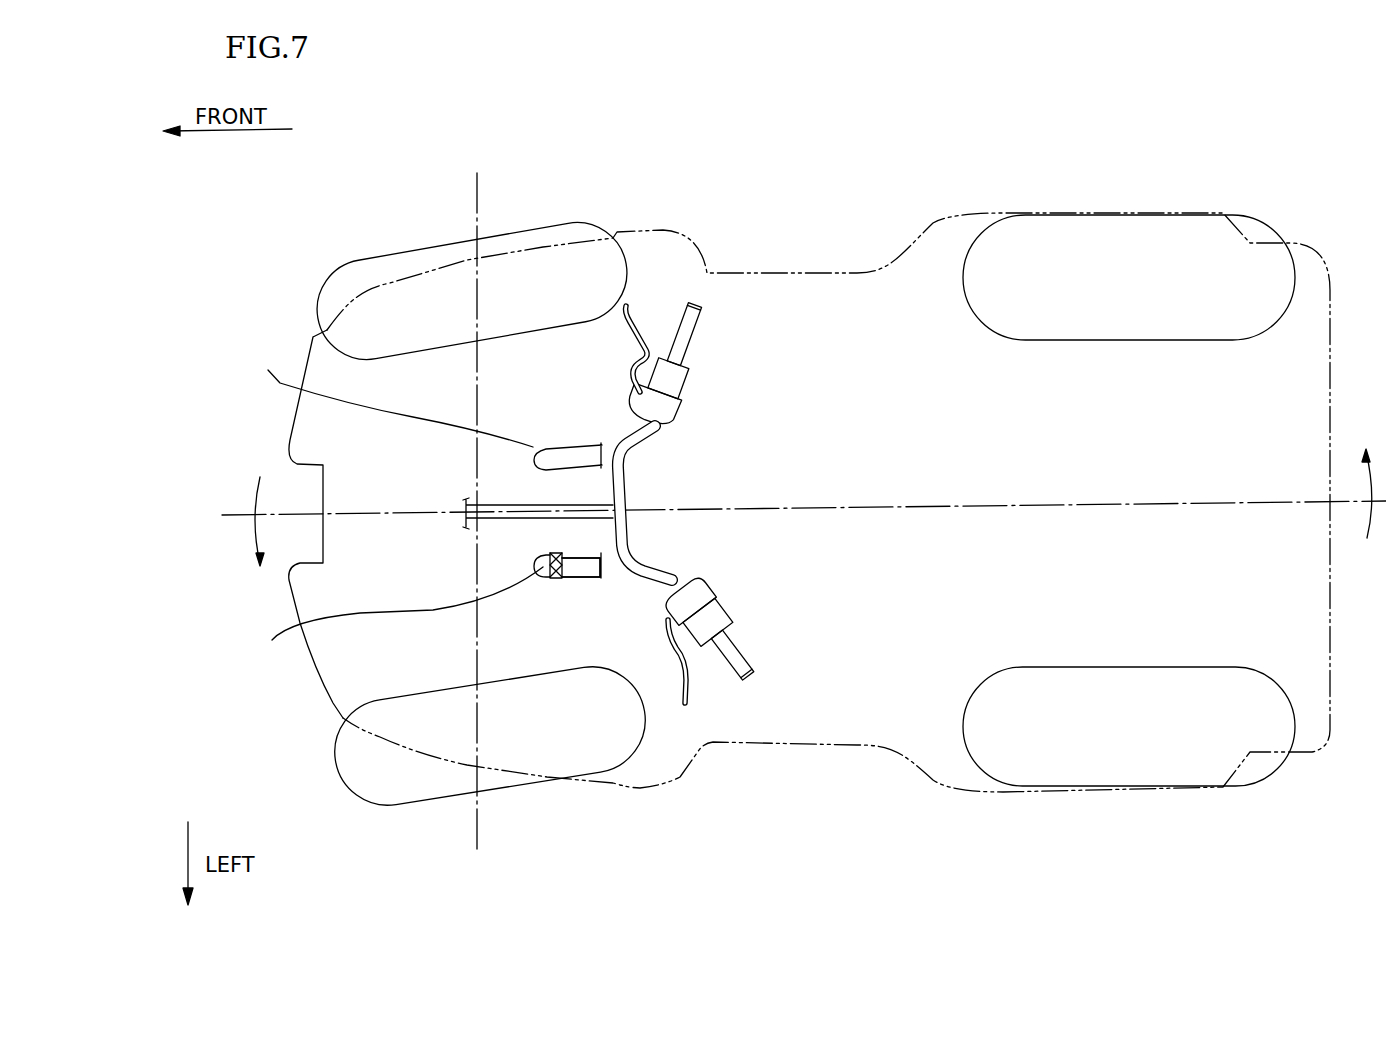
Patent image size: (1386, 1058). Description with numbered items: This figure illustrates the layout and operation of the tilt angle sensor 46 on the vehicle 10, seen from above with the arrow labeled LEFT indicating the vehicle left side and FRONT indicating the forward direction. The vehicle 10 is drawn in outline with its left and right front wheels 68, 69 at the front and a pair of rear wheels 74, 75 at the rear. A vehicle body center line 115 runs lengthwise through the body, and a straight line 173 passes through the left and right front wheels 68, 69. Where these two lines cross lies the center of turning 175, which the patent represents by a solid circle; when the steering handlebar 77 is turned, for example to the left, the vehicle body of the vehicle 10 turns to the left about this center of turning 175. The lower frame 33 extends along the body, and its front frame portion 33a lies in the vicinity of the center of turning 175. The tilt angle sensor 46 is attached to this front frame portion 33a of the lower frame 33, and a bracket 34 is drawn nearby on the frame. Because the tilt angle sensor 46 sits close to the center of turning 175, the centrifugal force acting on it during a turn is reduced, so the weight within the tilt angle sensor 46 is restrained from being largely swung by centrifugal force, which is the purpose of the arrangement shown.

The vehicle 10 is at (787, 272).
The lower frame 33 is at (420, 610).
The front frame portion 33a is at (588, 573).
The bracket 34 is at (422, 409).
The tilt angle sensor 46 is at (558, 578).
The left front wheel 68 is at (500, 790).
The right front wheel 69 is at (510, 232).
The left rear wheel 74 is at (963, 727).
The right rear wheel 75 is at (963, 287).
The steering handlebar 77 is at (620, 487).
The vehicle body center line 115 is at (233, 514).
The straight line passing through the left and right front wheels 173 is at (477, 207).
The center of turning 175 is at (467, 500).